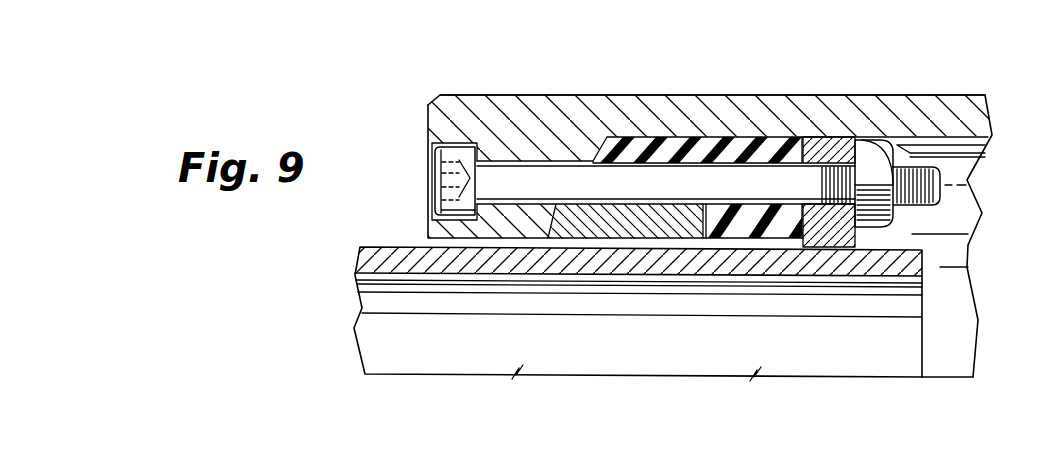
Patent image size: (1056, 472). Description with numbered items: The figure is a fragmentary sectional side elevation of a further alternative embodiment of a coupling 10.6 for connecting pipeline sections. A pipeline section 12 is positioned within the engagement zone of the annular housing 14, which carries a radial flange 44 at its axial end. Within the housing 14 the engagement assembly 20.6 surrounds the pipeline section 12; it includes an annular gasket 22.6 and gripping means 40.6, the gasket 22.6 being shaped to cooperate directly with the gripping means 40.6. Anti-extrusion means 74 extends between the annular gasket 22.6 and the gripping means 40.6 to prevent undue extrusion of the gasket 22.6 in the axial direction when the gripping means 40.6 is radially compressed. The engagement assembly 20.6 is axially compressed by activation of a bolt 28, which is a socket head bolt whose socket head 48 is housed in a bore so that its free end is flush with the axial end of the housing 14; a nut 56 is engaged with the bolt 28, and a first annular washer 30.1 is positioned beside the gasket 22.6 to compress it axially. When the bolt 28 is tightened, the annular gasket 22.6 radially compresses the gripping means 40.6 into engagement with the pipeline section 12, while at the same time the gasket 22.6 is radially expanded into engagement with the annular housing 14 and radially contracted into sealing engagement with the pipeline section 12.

The coupling 10.6 is at (743, 94).
The pipeline section 12 is at (925, 267).
The annular housing 14 is at (892, 96).
The engagement assembly 20.6 is at (766, 135).
The annular gasket 22.6 is at (763, 240).
The bolt 28 is at (557, 180).
The first annular washer 30.1 is at (835, 247).
The gripping means 40.6 is at (628, 238).
The radial flange 44 is at (504, 206).
The socket head 48 is at (435, 172).
The nut 56 is at (927, 137).
The anti-extrusion means 74 is at (717, 240).